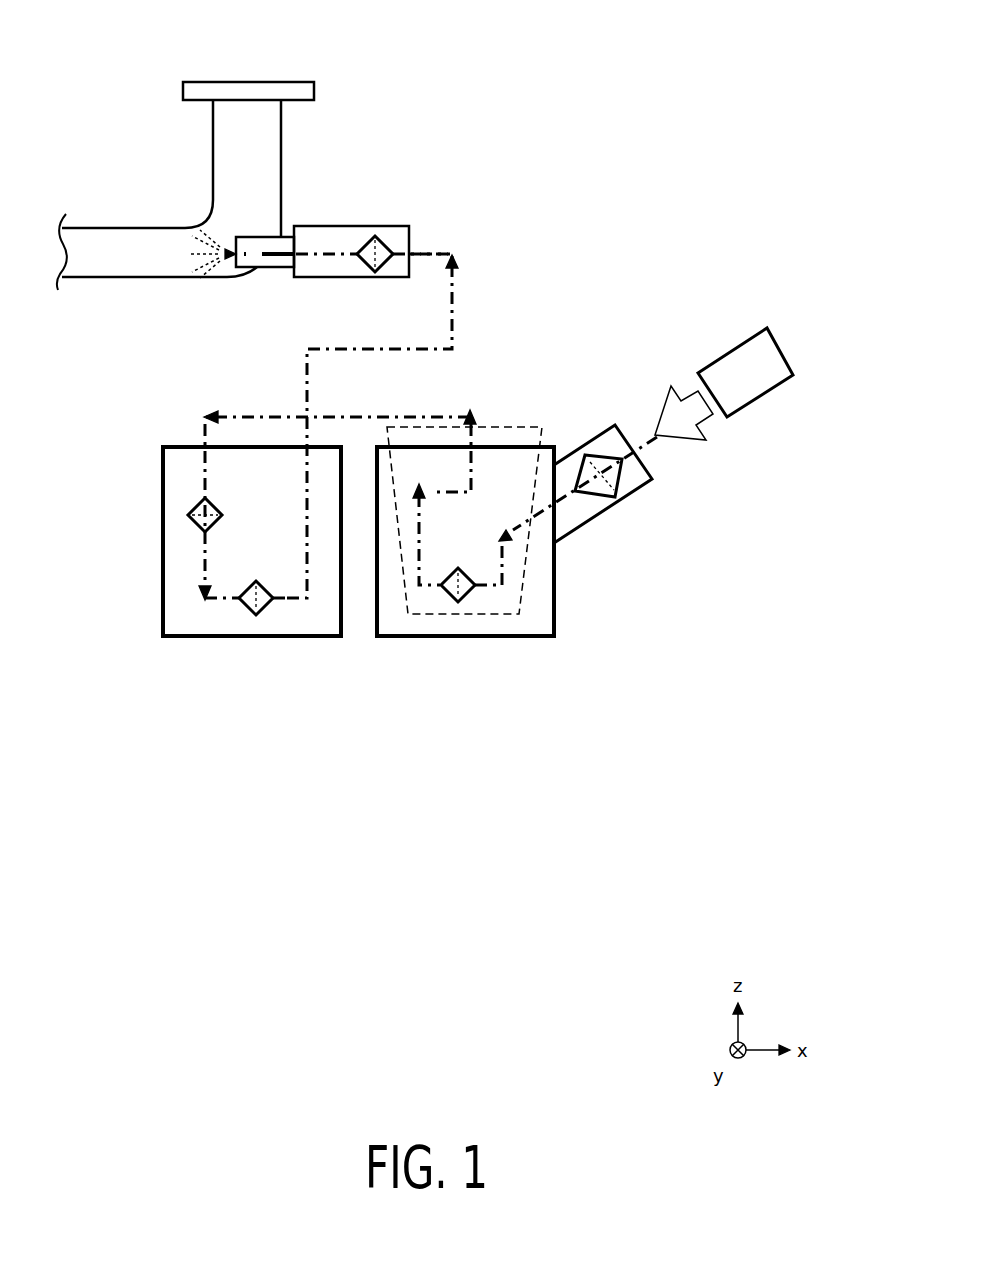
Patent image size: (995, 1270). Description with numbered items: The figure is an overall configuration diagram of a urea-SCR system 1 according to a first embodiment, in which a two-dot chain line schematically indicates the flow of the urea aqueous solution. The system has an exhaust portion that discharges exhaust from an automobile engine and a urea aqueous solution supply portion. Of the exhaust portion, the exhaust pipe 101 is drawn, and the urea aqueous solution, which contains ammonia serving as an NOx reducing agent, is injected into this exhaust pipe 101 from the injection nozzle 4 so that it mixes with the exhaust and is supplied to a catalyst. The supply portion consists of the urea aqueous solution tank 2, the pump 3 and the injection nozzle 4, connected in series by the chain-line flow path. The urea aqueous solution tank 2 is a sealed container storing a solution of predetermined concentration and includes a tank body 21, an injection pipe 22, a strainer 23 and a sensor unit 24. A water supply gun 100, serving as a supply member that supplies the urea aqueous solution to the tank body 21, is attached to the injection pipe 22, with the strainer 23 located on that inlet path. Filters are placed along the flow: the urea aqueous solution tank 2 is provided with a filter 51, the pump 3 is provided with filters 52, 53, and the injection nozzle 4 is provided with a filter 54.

The urea-SCR system 1 is at (557, 207).
The urea aqueous solution tank 2 is at (537, 566).
The pump 3 is at (217, 582).
The injection nozzle 4 is at (319, 247).
The tank body 21 is at (555, 593).
The injection pipe 22 is at (603, 437).
The strainer 23 is at (620, 477).
The sensor unit 24 is at (522, 614).
The filter 51 is at (453, 597).
The filter 52 is at (197, 500).
The filter 53 is at (243, 602).
The filter 54 is at (363, 258).
The water supply gun 100 is at (752, 350).
The exhaust pipe 101 is at (235, 112).